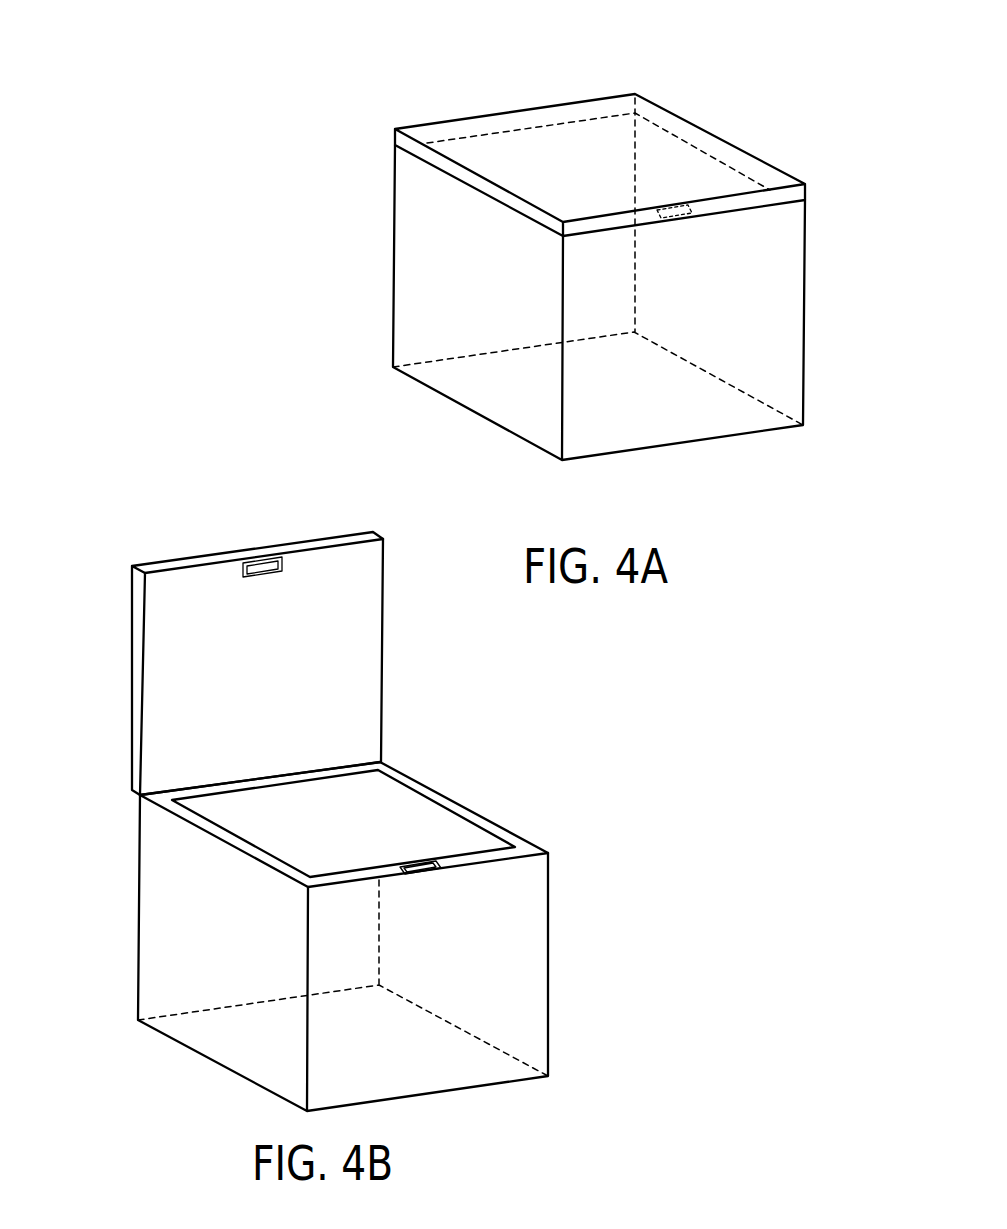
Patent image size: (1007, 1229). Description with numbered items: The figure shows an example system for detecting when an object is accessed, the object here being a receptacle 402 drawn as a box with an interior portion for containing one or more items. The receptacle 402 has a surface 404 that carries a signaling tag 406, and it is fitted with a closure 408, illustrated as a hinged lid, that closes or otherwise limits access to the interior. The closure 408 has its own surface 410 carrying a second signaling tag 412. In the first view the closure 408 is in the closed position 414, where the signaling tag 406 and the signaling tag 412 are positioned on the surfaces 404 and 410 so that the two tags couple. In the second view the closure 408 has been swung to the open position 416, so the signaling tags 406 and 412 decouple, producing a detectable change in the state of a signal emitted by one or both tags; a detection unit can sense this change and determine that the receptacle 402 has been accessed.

In FIG. 4A, the receptacle 402 is at (795, 285).
In FIG. 4B, the receptacle 402 is at (533, 945).
In FIG. 4B, the surface 404 is at (503, 853).
In FIG. 4B, the signaling tag 406 is at (420, 862).
In FIG. 4A, the closure 408 is at (798, 197).
In FIG. 4B, the closure 408 is at (350, 537).
In FIG. 4B, the surface 410 is at (360, 622).
In FIG. 4A, the signaling tag 412 is at (692, 212).
In FIG. 4B, the signaling tag 412 is at (258, 560).
In FIG. 4A, the closed position 414 is at (360, 75).
In FIG. 4B, the open position 416 is at (96, 616).